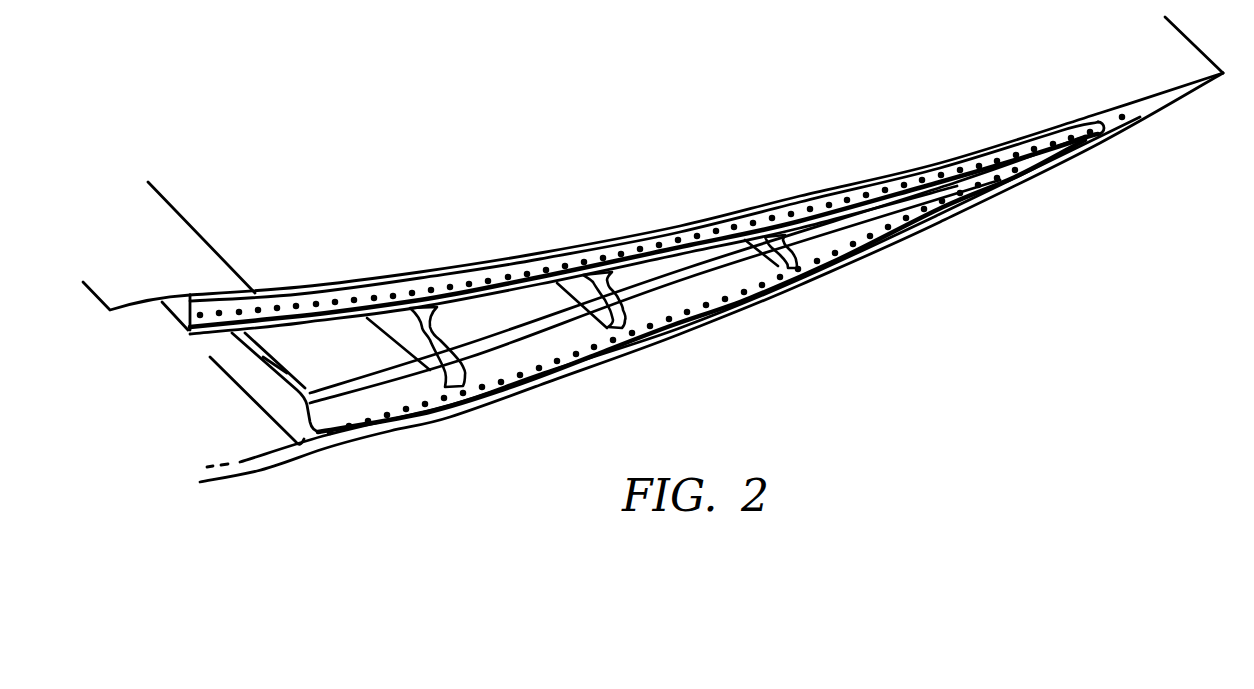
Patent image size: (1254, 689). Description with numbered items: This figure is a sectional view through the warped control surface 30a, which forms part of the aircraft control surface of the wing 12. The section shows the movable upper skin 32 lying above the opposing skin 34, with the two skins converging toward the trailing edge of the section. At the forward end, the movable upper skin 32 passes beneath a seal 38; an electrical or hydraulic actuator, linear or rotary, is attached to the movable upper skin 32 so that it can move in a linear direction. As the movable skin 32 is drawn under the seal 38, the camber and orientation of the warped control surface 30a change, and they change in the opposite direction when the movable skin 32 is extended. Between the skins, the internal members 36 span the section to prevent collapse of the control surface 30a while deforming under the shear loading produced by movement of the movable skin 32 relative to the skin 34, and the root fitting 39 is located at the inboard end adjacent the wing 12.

The warped control surface 30a is at (1027, 93).
The movable upper skin 32 is at (476, 247).
The skin 34 is at (285, 468).
The ribs 36 is at (452, 340).
The seal 38 is at (205, 238).
The root end fitting 39 is at (188, 332).
The wing 12 is at (253, 475).